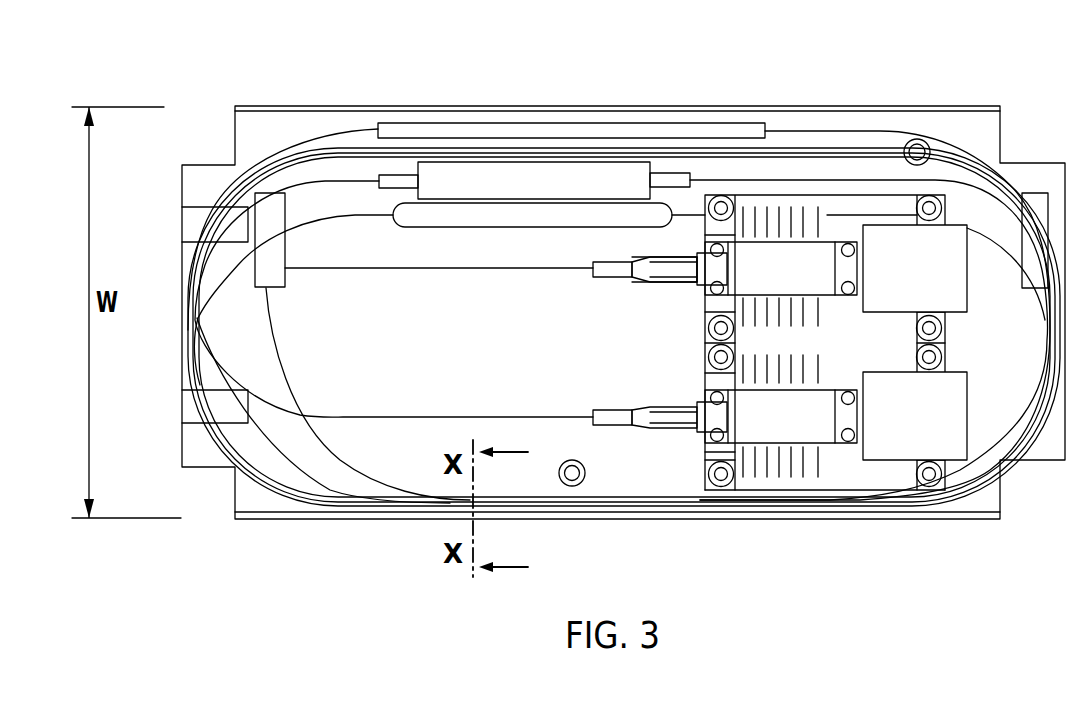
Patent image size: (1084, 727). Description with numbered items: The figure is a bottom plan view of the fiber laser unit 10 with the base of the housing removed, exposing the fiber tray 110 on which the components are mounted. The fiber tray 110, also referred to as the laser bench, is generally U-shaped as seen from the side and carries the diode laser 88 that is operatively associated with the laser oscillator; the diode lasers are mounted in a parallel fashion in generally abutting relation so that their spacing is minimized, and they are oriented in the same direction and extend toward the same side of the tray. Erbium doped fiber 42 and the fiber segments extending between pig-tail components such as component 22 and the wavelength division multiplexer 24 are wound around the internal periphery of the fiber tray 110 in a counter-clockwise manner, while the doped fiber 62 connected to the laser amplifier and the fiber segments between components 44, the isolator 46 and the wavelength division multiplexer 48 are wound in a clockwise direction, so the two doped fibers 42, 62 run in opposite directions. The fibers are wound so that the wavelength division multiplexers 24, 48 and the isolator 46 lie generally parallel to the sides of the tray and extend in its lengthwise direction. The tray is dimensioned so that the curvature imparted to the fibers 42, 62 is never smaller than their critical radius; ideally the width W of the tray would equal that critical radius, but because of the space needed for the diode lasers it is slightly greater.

The fiber laser unit 10 is at (859, 76).
The fiber tray 110 is at (336, 109).
The wavelength division multiplexer 24 is at (682, 130).
The wavelength division multiplexer 48 is at (525, 177).
The isolator 46 is at (517, 215).
The pig-tail component 22 is at (287, 252).
The Erbium doped fiber 42 is at (471, 270).
The diode laser 88 is at (663, 283).
The doped fiber 62 is at (423, 417).
The pig-tail component 44 is at (1035, 290).